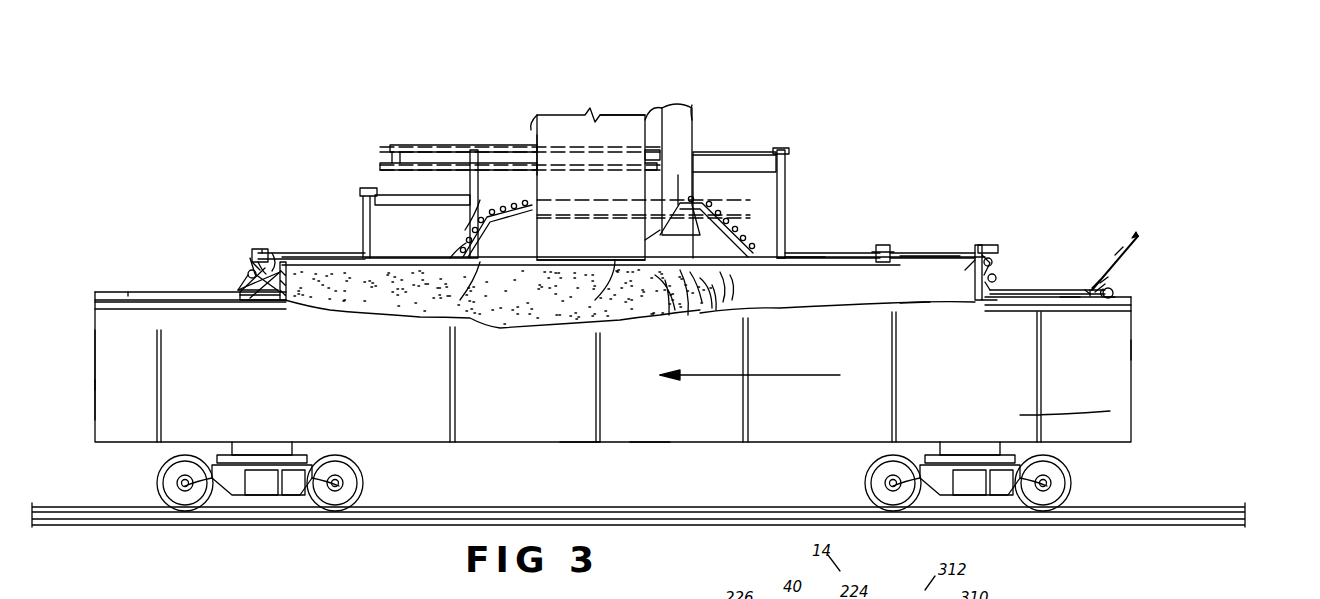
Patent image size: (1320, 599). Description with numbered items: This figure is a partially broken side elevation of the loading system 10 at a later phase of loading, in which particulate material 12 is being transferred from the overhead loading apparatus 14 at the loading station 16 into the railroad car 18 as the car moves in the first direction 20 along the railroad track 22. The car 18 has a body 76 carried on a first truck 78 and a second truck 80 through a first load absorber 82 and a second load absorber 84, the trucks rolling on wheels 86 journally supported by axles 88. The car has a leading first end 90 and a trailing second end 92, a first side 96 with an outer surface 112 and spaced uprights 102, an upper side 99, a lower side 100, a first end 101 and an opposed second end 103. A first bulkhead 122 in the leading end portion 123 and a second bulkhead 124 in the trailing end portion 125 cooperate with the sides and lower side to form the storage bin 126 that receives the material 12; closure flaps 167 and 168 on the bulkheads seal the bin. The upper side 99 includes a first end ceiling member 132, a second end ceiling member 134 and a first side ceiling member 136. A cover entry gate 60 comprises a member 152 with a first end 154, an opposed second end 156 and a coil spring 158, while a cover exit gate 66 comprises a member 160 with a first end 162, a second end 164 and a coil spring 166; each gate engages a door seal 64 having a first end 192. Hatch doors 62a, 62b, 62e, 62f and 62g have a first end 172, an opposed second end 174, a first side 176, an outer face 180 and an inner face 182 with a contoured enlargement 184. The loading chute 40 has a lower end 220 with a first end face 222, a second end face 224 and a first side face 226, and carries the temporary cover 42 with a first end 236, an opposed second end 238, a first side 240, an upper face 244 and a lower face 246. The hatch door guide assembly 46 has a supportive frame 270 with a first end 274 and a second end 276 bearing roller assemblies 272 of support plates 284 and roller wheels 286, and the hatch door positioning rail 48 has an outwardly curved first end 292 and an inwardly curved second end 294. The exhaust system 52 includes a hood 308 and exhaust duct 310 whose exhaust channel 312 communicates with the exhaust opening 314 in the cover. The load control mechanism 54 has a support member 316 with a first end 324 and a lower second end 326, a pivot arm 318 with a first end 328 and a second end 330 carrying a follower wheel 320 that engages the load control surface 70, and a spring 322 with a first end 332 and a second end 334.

The loading system 10 is at (1178, 162).
The particulate material 12 is at (516, 302).
The overhead loading apparatus 14 is at (366, 124).
The loading station 16 is at (166, 201).
The railroad car 18 is at (1218, 356).
The first direction 20 is at (856, 348).
The railroad track 22 is at (1147, 494).
The loading chute 40 is at (556, 114).
The temporary cover 42 is at (408, 242).
The hatch door guide assembly 46 is at (735, 210).
The hatch door positioning rail 48 is at (420, 166).
The exhaust system 52 is at (703, 116).
The load control mechanism 54 is at (1140, 256).
The cover entry gate 60 is at (245, 262).
The hatch door 62a is at (297, 252).
The hatch door 62b is at (364, 190).
The hatch door 62e is at (754, 151).
The hatch door 62f is at (835, 256).
The tube section 62g is at (913, 253).
The door seal 64 is at (880, 245).
The cover exit gate 66 is at (990, 255).
The load control surface 70 is at (153, 312).
The body 76 is at (1105, 397).
The first truck 78 is at (266, 495).
The second truck 80 is at (964, 487).
The first load absorber 82 is at (270, 440).
The second load absorber 84 is at (943, 444).
The wheels 86 is at (157, 466).
The axles 88 is at (182, 491).
The leading first end 90 is at (92, 351).
The trailing second end 92 is at (1134, 327).
The first side 96 is at (560, 444).
The upper side 99 is at (132, 292).
The lower side 100 is at (640, 442).
The first end 101 is at (110, 404).
The uprights 102 is at (466, 402).
The opposed second end 103 is at (1133, 352).
The outer surface 112 is at (110, 389).
The first bulkhead 122 is at (274, 308).
The leading end portion 123 is at (168, 413).
The second bulkhead 124 is at (991, 285).
The trailing end portion 125 is at (1084, 411).
The storage bin 126 is at (915, 300).
The first end ceiling member 132 is at (120, 290).
The second end ceiling member 134 is at (1052, 285).
The first side ceiling member 136 is at (108, 301).
The member 152 is at (245, 274).
The first end 154 is at (274, 250).
The opposed second end 156 is at (268, 266).
The coil spring 158 is at (245, 280).
The member 160 is at (990, 267).
The first end 162 is at (973, 245).
The second end 164 is at (994, 244).
The coil spring 166 is at (995, 273).
The closure flap 167 is at (262, 250).
The closure flap 168 is at (972, 266).
The first end 172 is at (253, 260).
The opposed second end 174 is at (388, 222).
The first side 176 is at (418, 200).
The outer face 180 is at (940, 254).
The inner face 182 is at (708, 162).
The contoured enlargement 184 is at (770, 188).
The first end 192 is at (781, 152).
The lower end 220 is at (555, 260).
The first end face 222 is at (537, 134).
The second end face 224 is at (646, 115).
The first side face 226 is at (545, 111).
The first end 236 is at (902, 264).
The opposed second end 238 is at (292, 298).
The first side 240 is at (836, 264).
The upper face 244 is at (607, 330).
The lower face 246 is at (805, 255).
The supportive frame 270 is at (537, 214).
The roller assemblies 272 is at (780, 247).
The first end 274 is at (735, 255).
The second end 276 is at (465, 325).
The support plates 284 is at (469, 245).
The roller wheels 286 is at (478, 202).
The outwardly curved first end 292 is at (703, 131).
The inwardly curved second end 294 is at (380, 166).
The hood 308 is at (645, 238).
The exhaust duct 310 is at (664, 108).
The exhaust channel 312 is at (690, 103).
The exhaust opening 314 is at (698, 323).
The support member 316 is at (1120, 243).
The pivot arm 318 is at (1080, 297).
The follower wheel 320 is at (1120, 292).
The spring 322 is at (1105, 288).
The first end 324 is at (1130, 218).
The lower second end 326 is at (1095, 281).
The first end 328 is at (1082, 293).
The second end 330 is at (1109, 297).
The first end 332 is at (1108, 282).
The second end 334 is at (1092, 295).